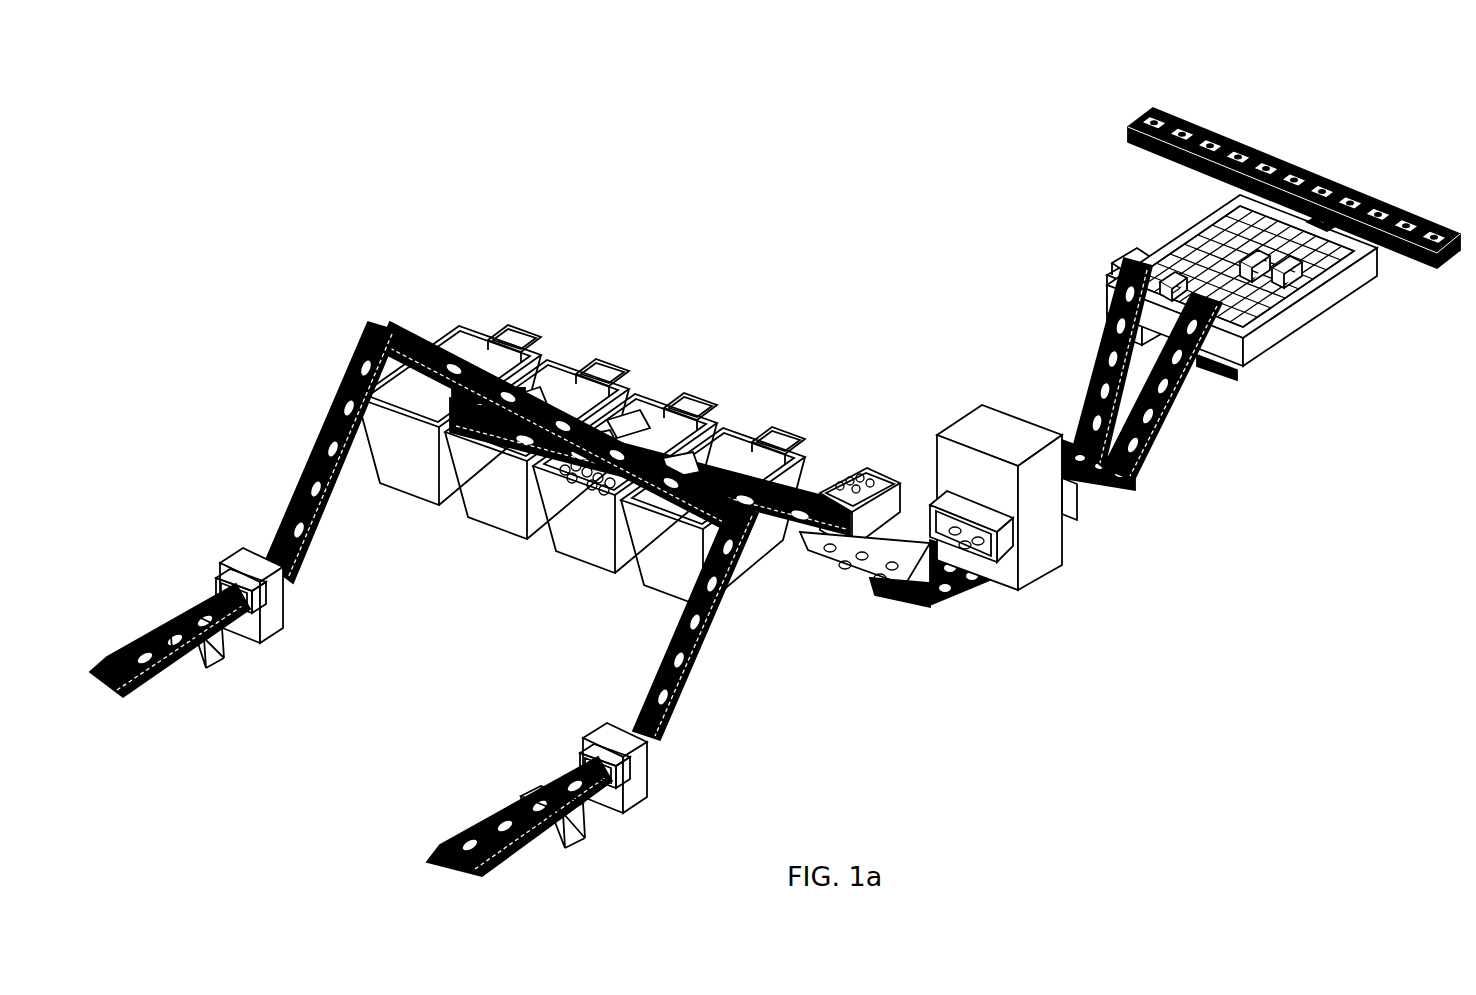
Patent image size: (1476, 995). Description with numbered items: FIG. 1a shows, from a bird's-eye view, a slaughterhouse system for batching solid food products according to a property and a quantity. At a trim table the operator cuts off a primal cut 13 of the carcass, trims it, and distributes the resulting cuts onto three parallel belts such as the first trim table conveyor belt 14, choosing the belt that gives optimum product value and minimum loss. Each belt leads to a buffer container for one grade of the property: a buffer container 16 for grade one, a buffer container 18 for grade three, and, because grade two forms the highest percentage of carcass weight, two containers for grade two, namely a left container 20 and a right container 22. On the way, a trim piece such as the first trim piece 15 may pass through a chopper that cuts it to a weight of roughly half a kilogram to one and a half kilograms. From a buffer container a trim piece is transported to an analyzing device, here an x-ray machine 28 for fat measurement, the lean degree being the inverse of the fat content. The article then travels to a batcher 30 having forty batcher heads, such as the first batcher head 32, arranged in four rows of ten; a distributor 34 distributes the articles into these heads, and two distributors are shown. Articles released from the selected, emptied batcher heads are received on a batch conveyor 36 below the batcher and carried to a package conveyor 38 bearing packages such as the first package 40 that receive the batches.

The primal cut 13 is at (497, 810).
The first trim table conveyor belt 14 is at (140, 632).
The first trim piece 15 is at (1110, 485).
The buffer container 16 is at (666, 400).
The buffer container 18 is at (578, 362).
The left container 20 is at (510, 332).
The right container 22 is at (755, 427).
The x-ray machine 28 is at (968, 436).
The batcher 30 is at (1250, 350).
The first batcher head 32 is at (1340, 260).
The distributor 34 is at (1306, 297).
The batch conveyor 36 is at (1333, 187).
The package conveyor 38 is at (1257, 152).
The first package 40 is at (1407, 210).